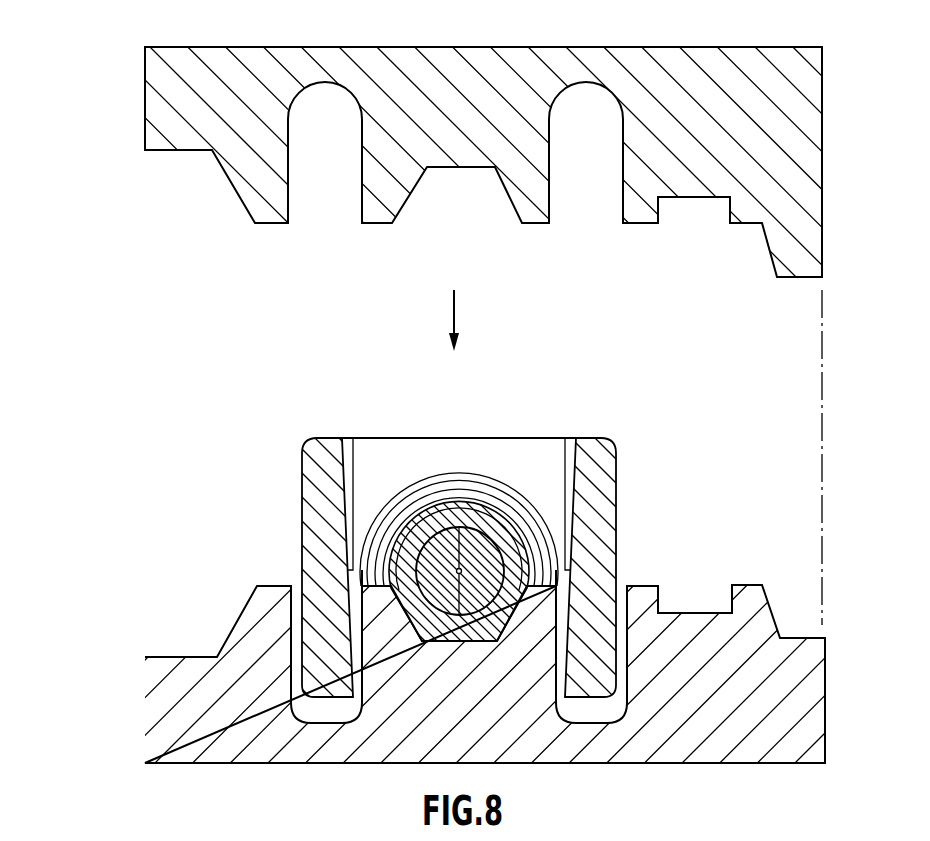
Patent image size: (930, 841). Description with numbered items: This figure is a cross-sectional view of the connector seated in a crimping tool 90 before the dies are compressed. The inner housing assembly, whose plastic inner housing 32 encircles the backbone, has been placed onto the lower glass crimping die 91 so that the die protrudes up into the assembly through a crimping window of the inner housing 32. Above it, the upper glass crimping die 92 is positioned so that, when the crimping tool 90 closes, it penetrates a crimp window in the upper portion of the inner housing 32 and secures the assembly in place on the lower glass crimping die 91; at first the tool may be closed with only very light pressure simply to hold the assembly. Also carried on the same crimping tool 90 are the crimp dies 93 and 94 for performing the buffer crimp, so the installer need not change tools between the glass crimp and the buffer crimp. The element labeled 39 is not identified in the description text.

The crimping tool 90 is at (173, 370).
The upper glass crimping die 92 is at (467, 170).
The buffer crimp die 94 is at (690, 197).
The buffer crimp die 93 is at (692, 613).
The inner housing 32 is at (300, 510).
The ball 39 is at (492, 510).
The lower glass crimping die 91 is at (473, 643).